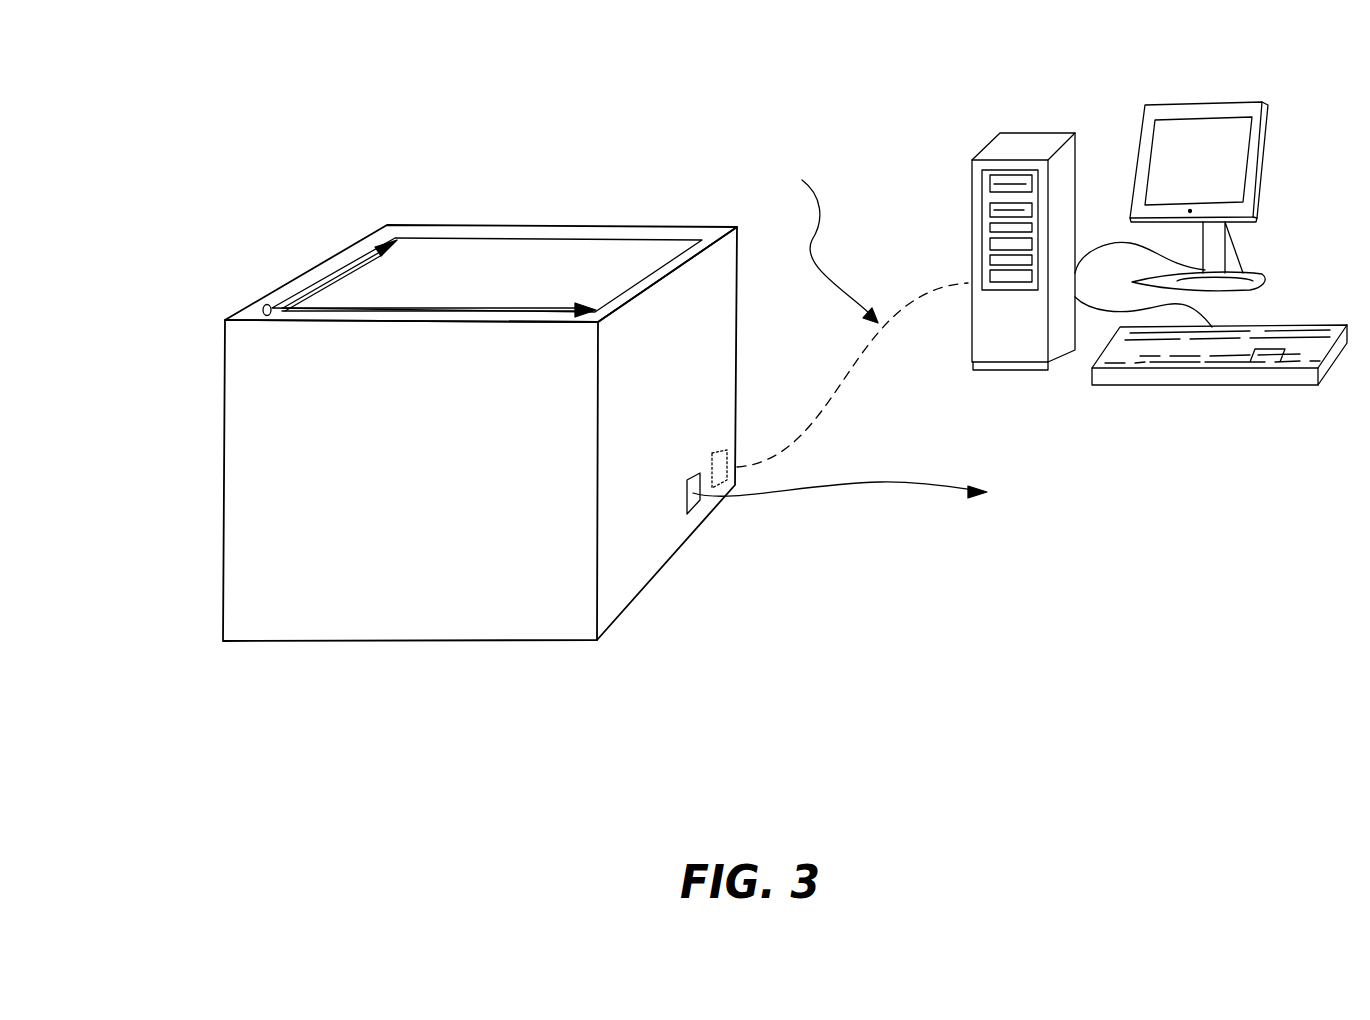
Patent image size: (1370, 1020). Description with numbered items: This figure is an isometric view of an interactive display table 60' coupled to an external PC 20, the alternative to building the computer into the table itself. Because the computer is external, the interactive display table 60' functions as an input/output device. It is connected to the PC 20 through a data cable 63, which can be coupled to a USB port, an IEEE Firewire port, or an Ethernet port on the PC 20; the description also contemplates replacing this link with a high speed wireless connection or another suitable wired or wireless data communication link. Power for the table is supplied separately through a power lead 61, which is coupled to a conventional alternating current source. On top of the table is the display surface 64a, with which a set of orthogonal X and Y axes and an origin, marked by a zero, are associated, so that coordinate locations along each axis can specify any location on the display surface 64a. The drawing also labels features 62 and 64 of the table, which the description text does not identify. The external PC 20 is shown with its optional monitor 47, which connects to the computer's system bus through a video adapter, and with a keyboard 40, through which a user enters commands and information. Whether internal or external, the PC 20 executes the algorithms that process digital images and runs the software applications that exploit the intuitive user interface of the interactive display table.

The PC 20 is at (1037, 132).
The monitor 47 is at (1265, 158).
The keyboard 40 is at (1297, 327).
The interactive display table 60' is at (432, 373).
The housing 62 is at (223, 437).
The digitizing tablet surface 64 is at (448, 276).
The display surface 64a is at (487, 274).
The data cable 63 is at (863, 368).
The power lead 61 is at (843, 485).